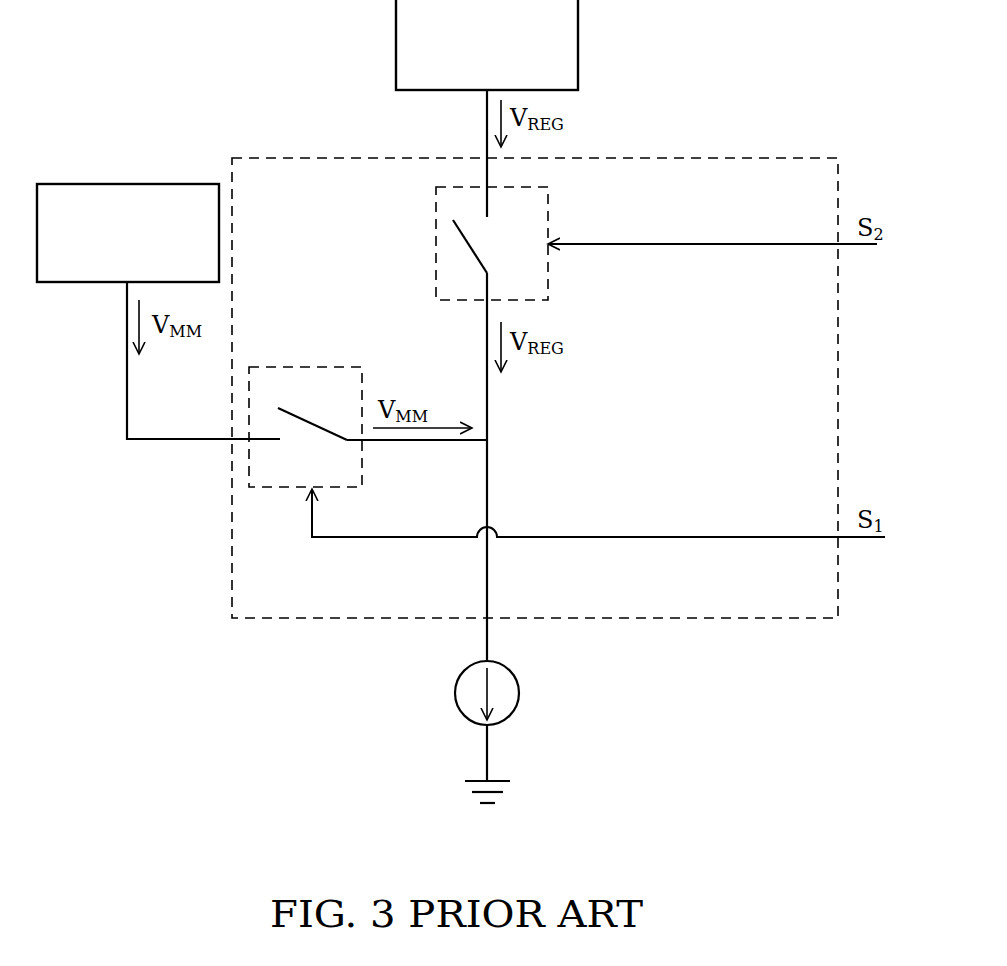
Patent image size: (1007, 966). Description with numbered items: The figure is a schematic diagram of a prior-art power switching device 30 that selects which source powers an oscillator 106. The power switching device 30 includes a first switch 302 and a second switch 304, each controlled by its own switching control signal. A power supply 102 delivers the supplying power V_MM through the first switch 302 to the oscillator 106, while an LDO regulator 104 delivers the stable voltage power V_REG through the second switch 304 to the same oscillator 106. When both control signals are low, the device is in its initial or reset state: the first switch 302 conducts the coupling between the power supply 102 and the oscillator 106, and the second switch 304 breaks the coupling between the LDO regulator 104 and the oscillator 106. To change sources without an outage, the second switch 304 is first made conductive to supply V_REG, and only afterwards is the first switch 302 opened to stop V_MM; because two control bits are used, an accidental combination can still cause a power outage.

The power switching device 30 is at (338, 158).
The power supply 102 is at (127, 184).
The LDO regulator 104 is at (578, 42).
The oscillator 106 is at (455, 696).
The first switch 302 is at (303, 367).
The second switch 304 is at (436, 245).